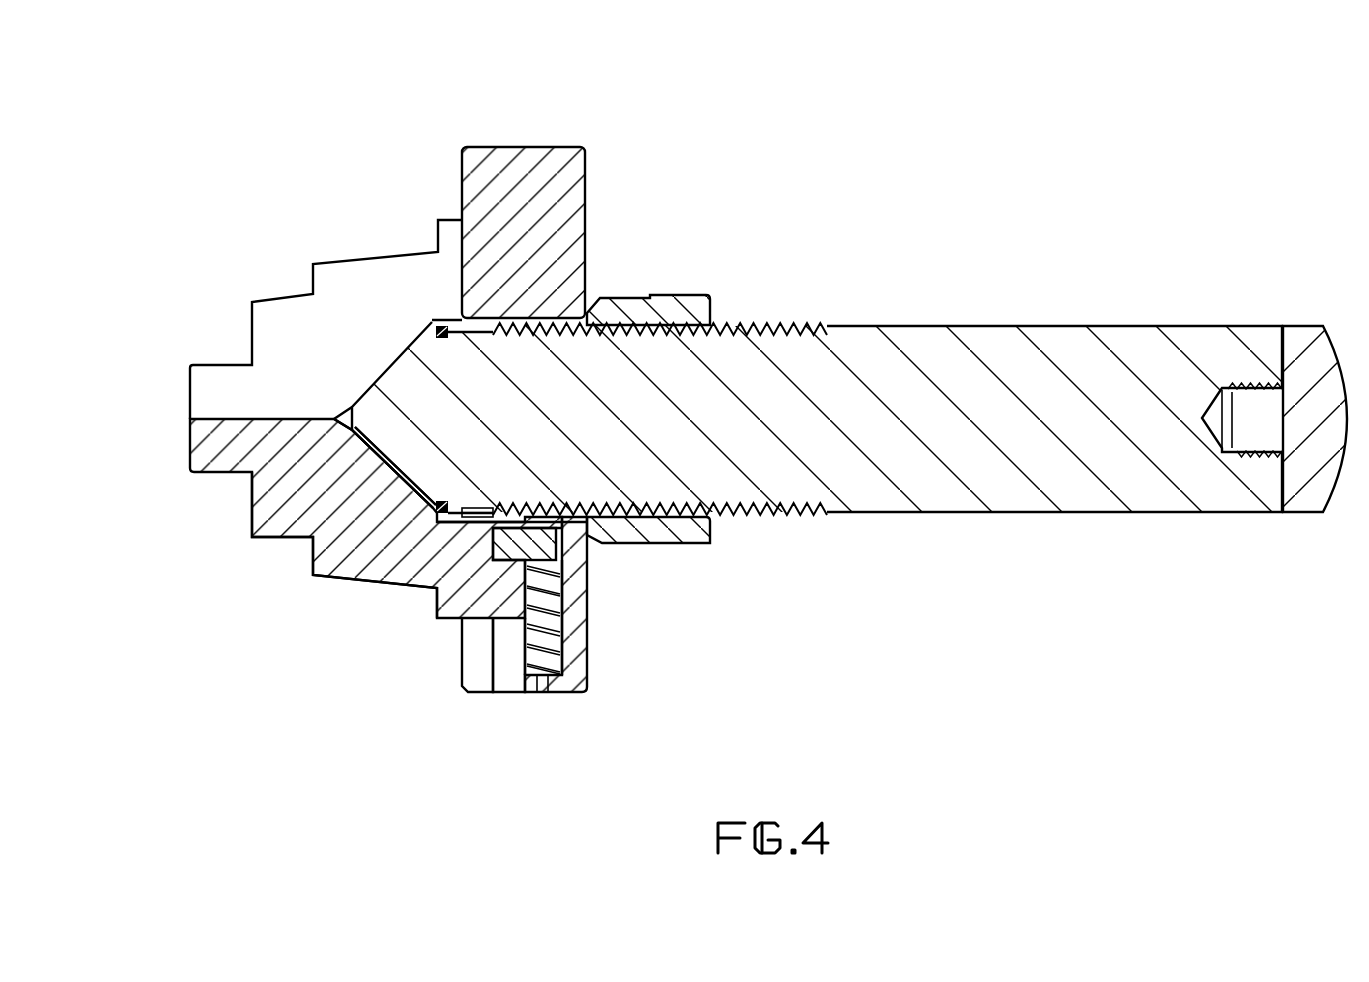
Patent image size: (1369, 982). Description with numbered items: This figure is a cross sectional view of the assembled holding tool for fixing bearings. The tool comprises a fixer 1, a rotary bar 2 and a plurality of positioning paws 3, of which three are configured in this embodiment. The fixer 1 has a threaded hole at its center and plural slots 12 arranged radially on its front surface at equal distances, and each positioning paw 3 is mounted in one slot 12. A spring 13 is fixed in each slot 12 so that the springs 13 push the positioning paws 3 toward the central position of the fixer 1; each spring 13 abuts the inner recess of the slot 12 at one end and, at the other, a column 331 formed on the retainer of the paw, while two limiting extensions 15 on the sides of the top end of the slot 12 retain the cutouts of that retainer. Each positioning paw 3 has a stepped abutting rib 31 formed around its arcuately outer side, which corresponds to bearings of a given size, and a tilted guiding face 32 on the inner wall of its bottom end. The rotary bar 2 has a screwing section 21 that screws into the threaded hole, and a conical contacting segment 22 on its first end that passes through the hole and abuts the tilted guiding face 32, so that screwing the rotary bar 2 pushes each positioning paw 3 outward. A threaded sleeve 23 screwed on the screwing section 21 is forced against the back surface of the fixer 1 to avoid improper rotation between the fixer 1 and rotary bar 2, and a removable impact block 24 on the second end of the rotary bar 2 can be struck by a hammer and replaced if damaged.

The fixer 1 is at (532, 147).
The rotary bar 2 is at (1000, 326).
The screwing section 21 is at (783, 326).
The threaded sleeve 23 is at (677, 297).
The impact block 24 is at (1300, 326).
The positioning paw 3 is at (190, 442).
The stepped abutting rib 31 is at (252, 515).
The conical contacting segment 22 is at (378, 478).
The tilted guiding face 32 is at (378, 478).
The column 331 is at (558, 545).
The spring 13 is at (548, 628).
The limiting extension 15 is at (478, 692).
The slot 12 is at (510, 680).